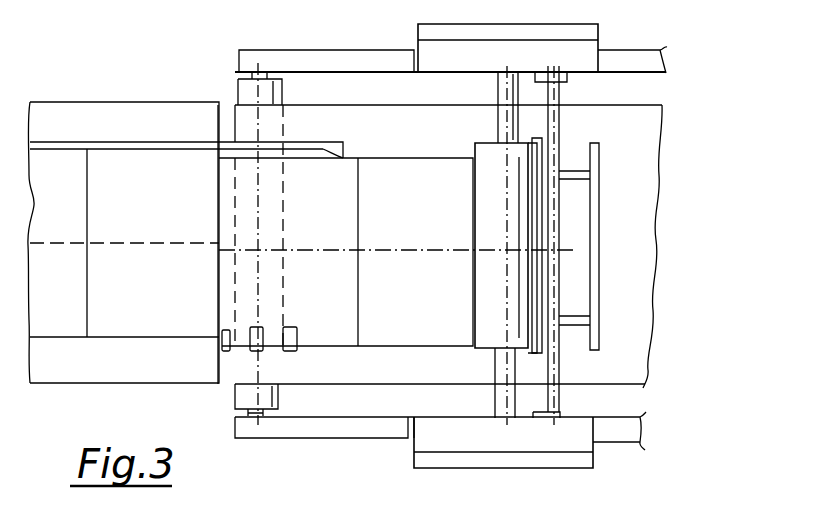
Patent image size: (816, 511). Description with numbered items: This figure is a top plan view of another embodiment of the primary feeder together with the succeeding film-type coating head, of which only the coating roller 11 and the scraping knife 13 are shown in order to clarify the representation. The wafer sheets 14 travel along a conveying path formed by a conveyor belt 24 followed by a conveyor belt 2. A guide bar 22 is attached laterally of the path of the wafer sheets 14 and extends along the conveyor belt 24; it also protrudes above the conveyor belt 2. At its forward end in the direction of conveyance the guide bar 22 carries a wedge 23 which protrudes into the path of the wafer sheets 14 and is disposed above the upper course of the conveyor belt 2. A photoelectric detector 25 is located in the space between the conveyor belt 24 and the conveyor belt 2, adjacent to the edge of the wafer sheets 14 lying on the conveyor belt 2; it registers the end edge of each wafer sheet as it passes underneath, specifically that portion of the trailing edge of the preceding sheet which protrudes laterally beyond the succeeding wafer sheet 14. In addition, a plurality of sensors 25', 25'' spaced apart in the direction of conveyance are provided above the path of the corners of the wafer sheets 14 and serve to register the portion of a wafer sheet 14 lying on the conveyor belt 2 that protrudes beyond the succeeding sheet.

The conveyor belt 2 is at (450, 378).
The coating roller 11 is at (482, 165).
The scraping knife 13 is at (545, 157).
The wafer sheets 14 is at (157, 208).
The guide bar 22 is at (109, 146).
The wedge 23 is at (335, 148).
The conveyor belt 24 is at (160, 122).
The photoelectric detector 25 is at (212, 378).
The sensor 25' is at (291, 317).
The sensor 25'' is at (310, 351).